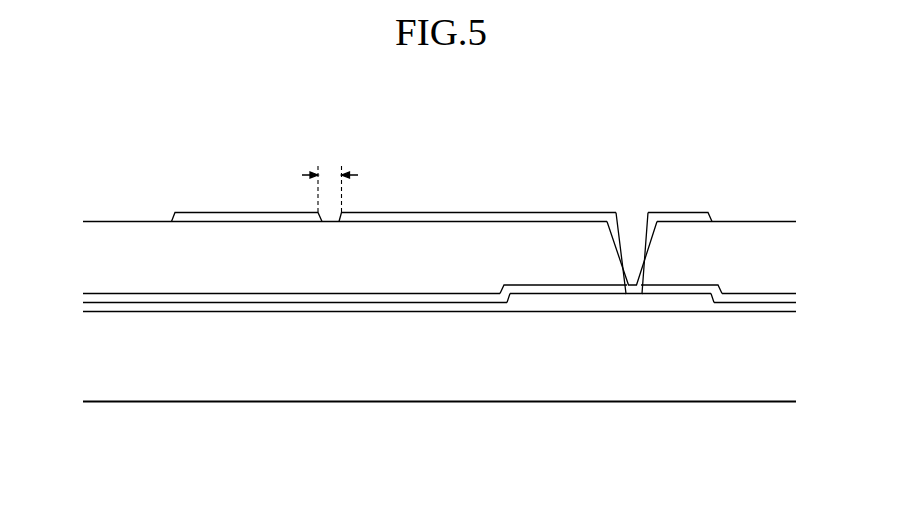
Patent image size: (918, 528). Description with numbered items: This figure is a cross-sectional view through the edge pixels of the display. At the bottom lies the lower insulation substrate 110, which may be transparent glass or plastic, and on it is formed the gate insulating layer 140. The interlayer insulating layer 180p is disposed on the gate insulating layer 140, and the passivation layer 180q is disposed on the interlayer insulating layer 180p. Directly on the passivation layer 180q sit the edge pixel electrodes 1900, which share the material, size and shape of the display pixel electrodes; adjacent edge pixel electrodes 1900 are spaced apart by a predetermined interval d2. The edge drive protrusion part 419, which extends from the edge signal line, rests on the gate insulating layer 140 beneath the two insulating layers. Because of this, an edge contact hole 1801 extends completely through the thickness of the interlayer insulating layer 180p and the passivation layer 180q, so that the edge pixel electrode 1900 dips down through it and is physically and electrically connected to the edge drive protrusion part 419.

The lower insulation substrate 110 is at (427, 380).
The gate insulating layer 140 is at (487, 306).
The interlayer insulating layer 180p is at (662, 300).
The edge drive protrusion part 419 is at (563, 289).
The edge contact hole 1801 is at (622, 240).
The edge pixel electrode 1900 is at (687, 218).
The passivation layer 180q is at (750, 242).
The predetermined interval d2 is at (330, 177).